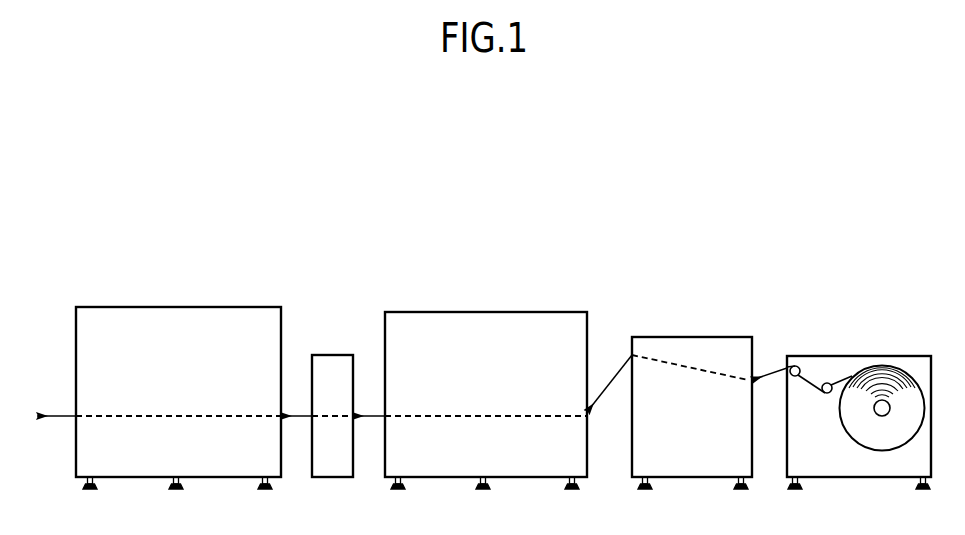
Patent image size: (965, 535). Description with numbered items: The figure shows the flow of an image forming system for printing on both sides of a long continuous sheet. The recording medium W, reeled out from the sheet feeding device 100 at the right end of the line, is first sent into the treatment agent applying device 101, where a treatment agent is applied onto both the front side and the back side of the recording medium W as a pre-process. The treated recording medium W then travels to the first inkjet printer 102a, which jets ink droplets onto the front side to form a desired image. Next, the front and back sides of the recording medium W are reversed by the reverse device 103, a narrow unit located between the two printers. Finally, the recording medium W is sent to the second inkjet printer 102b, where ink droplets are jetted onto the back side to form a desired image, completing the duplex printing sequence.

The sheet feeding device 100 is at (871, 356).
The treatment agent applying device 101 is at (687, 340).
The first inkjet printer 102a is at (510, 316).
The second inkjet printer 102b is at (225, 315).
The reverse device 103 is at (339, 353).
The recording medium W is at (788, 366).